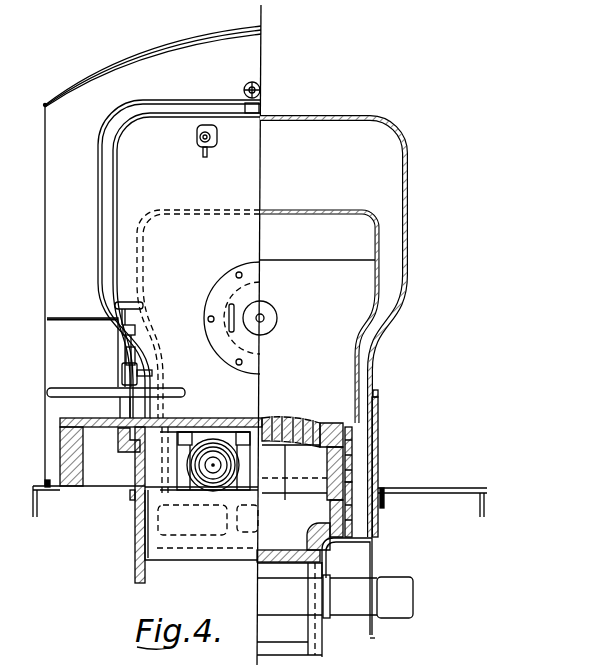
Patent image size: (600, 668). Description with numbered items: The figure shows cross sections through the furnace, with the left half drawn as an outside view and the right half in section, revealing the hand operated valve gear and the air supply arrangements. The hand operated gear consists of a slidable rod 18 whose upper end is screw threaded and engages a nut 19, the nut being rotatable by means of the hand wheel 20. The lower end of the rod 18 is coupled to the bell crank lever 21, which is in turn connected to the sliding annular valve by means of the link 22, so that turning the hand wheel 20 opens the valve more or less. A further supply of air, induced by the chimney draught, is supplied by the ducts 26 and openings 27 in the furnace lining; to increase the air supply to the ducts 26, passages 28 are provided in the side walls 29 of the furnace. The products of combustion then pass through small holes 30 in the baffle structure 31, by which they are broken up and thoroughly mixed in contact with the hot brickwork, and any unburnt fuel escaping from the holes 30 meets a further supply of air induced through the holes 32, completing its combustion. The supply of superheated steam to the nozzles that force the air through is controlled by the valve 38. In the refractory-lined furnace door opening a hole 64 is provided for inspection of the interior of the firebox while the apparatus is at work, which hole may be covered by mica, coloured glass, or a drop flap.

The slidable rod 18 is at (122, 375).
The nut 19 is at (124, 350).
The hand wheel 20 is at (143, 305).
The bell crank lever 21 is at (117, 437).
The link 22 is at (250, 478).
The ducts 26 is at (352, 453).
The openings 27 is at (332, 458).
The passages 28 is at (352, 517).
The side walls 29 is at (330, 495).
The small holes 30 is at (304, 423).
The baffle structure 31 is at (282, 420).
The holes 32 is at (345, 427).
The valve 38 is at (214, 143).
The hole 64 is at (264, 317).